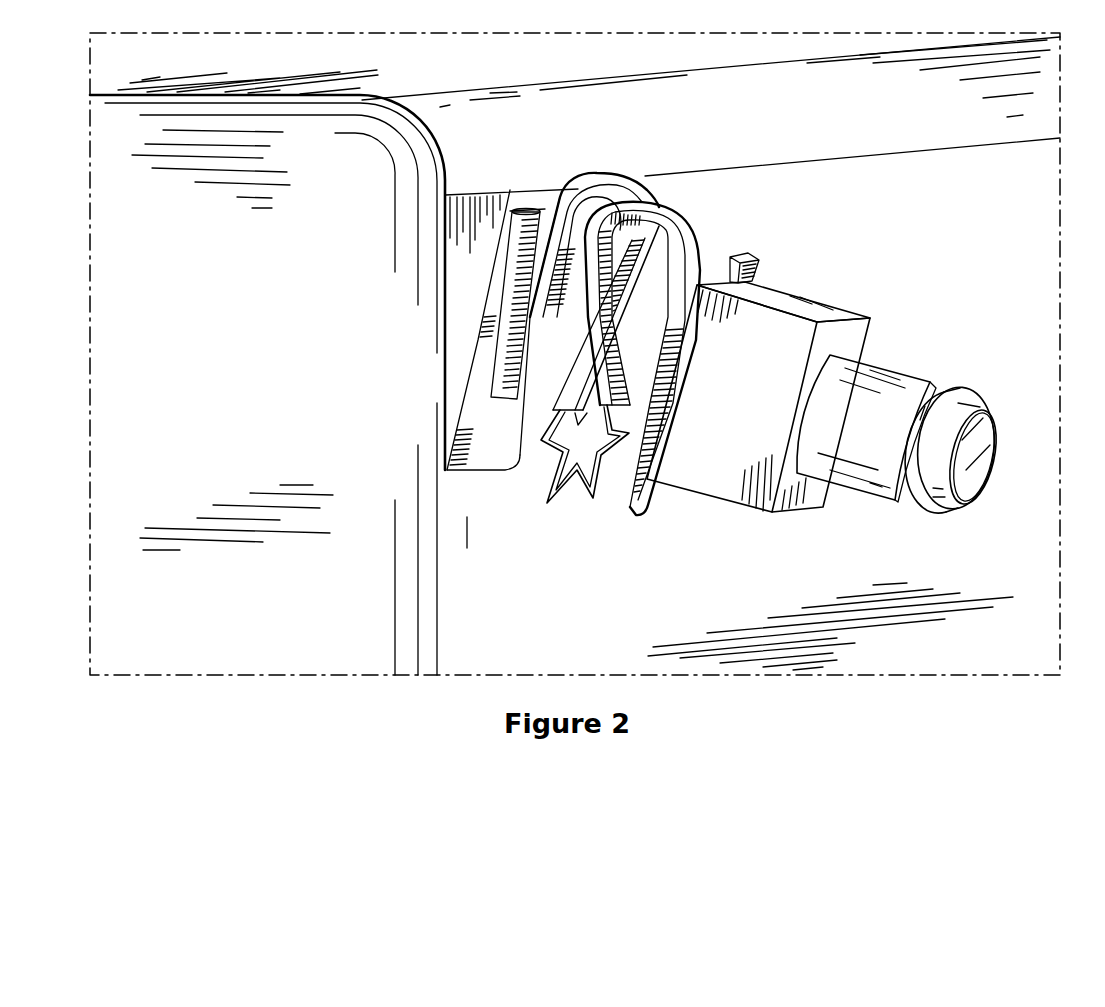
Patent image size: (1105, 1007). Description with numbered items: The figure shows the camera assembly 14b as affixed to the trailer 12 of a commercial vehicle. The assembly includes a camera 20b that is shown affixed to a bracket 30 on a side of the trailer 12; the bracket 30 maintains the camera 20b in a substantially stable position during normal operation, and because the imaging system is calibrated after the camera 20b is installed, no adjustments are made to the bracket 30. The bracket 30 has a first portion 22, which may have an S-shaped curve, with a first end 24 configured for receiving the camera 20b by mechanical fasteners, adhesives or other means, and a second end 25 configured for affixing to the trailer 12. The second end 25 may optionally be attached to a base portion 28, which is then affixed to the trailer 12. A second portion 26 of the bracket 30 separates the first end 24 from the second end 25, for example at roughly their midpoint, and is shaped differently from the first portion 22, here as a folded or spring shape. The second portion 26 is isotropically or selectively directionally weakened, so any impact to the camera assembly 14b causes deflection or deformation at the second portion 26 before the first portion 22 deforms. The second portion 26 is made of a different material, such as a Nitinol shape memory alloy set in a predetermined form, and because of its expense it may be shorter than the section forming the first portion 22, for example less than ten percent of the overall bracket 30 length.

The trailer 12 is at (489, 108).
The first camera assembly 14b is at (808, 150).
The bracket 30 is at (600, 306).
The first portion 22 is at (632, 177).
The first end 24 is at (758, 268).
The camera 20b is at (825, 377).
The second portion 26 is at (581, 487).
The base portion 28 is at (499, 210).
The second end 25 is at (525, 210).